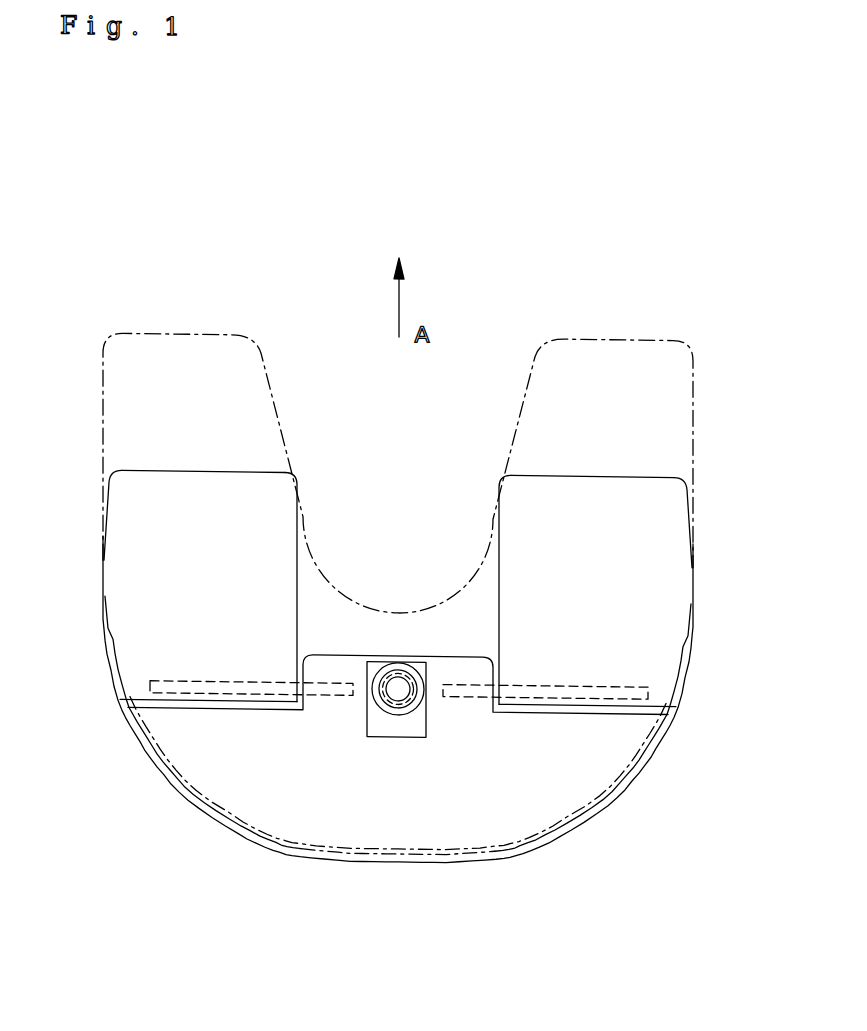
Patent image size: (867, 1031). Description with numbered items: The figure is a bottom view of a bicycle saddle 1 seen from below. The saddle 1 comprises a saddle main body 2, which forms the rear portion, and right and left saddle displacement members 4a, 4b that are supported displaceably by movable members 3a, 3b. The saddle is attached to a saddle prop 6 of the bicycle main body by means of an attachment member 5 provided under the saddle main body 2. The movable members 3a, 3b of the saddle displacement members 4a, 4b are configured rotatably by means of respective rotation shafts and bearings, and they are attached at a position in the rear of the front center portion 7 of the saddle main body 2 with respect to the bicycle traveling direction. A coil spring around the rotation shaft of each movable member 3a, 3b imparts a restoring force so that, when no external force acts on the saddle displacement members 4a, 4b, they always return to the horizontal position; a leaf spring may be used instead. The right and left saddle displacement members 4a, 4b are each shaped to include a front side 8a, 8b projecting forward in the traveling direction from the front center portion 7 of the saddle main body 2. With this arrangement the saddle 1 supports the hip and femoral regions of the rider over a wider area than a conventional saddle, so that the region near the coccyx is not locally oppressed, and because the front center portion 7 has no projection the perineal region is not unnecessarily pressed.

The saddle 1 is at (673, 741).
The saddle main body 2 is at (522, 778).
The movable member 3a is at (150, 690).
The movable member 3b is at (648, 688).
The saddle displacement member 4a is at (131, 542).
The saddle displacement member 4b is at (653, 548).
The attachment member 5 is at (376, 728).
The saddle prop 6 is at (387, 674).
The front center portion 7 is at (415, 654).
The front side 8a is at (155, 475).
The front side 8b is at (638, 473).